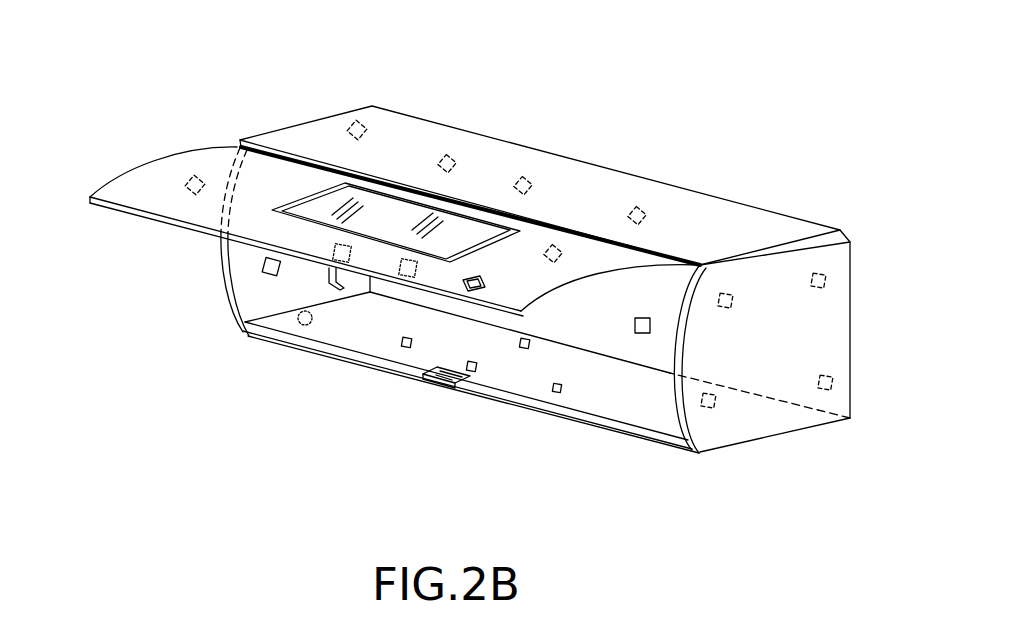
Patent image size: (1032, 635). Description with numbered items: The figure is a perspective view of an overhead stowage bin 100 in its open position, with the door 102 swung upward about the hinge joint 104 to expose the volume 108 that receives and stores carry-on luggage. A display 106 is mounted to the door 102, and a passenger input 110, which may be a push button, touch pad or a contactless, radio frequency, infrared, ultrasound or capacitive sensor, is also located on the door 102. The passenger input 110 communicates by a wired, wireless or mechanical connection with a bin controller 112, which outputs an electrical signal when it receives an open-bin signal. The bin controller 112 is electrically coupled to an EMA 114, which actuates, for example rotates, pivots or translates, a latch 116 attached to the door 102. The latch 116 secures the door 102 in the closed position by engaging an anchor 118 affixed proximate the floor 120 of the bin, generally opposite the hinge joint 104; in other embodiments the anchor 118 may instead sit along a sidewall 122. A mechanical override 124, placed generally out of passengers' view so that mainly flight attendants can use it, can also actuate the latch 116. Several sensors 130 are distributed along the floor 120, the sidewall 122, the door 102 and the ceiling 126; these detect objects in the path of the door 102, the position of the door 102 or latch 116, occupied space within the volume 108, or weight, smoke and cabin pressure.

The overhead stowage bin 100 is at (497, 267).
The door 102 is at (157, 177).
The hinge joint 104 is at (263, 147).
The display 106 is at (388, 210).
The volume 108 is at (597, 327).
The passenger input 110 is at (475, 283).
The bin controller 112 is at (404, 268).
The EMA 114 is at (332, 253).
The latch 116 is at (327, 278).
The anchor 118 is at (437, 381).
The floor 120 is at (471, 350).
The sidewall 122 is at (757, 407).
The mechanical override 124 is at (305, 325).
The ceiling 126 is at (763, 222).
The sensors 130 is at (520, 187).